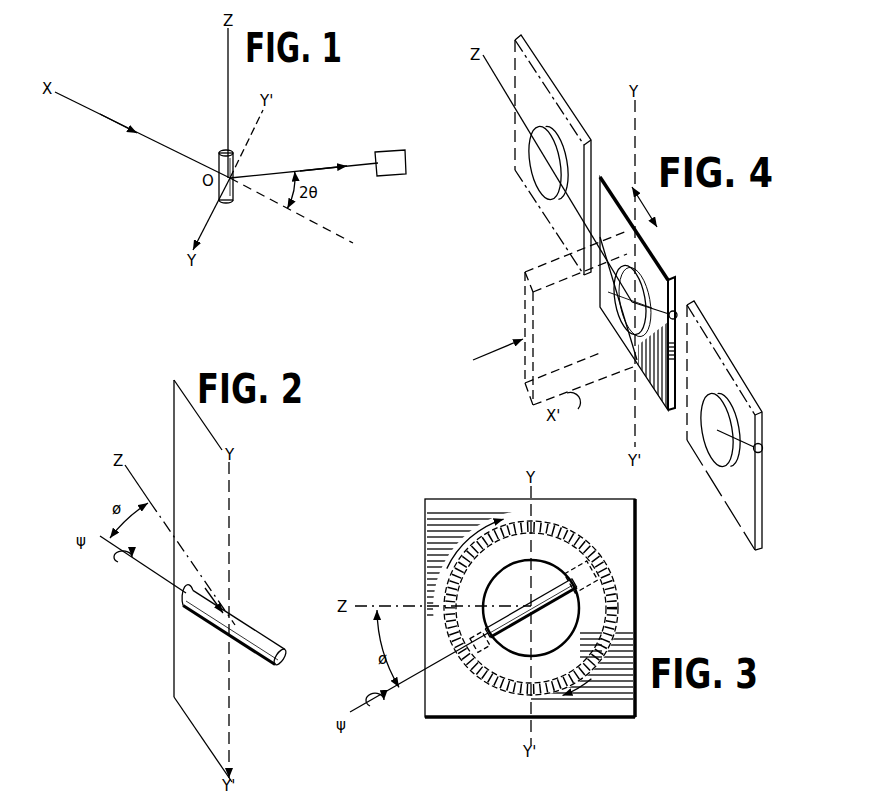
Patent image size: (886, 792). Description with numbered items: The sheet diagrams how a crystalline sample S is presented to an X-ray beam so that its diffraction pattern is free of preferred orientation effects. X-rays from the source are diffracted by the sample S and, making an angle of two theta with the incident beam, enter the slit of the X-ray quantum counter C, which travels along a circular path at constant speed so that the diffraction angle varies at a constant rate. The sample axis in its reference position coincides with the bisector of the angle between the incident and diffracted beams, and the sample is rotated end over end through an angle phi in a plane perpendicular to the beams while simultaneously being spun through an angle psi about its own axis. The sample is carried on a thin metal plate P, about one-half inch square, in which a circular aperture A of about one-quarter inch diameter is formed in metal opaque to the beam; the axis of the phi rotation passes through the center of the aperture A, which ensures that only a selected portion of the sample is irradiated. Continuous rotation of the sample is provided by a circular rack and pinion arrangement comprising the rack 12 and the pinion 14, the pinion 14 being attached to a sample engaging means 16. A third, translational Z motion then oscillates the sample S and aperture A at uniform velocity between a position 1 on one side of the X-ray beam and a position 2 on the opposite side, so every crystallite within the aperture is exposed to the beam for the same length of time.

In FIG. 4, the position 1 is at (542, 80).
In FIG. 4, the position 2 is at (712, 346).
In FIG. 3, the circular rack 12 is at (588, 585).
In FIG. 3, the pinion 14 is at (602, 553).
In FIG. 3, the sample engaging means 16 is at (600, 604).
In FIG. 4, the metal plate P is at (624, 186).
In FIG. 3, the metal plate P is at (622, 641).
In FIG. 1, the sample S is at (228, 204).
In FIG. 2, the sample S is at (284, 657).
In FIG. 4, the sample S is at (628, 300).
In FIG. 3, the sample S is at (540, 605).
In FIG. 4, the aperture A is at (640, 312).
In FIG. 3, the aperture A is at (537, 648).
In FIG. 1, the X-ray quantum counter C is at (318, 163).